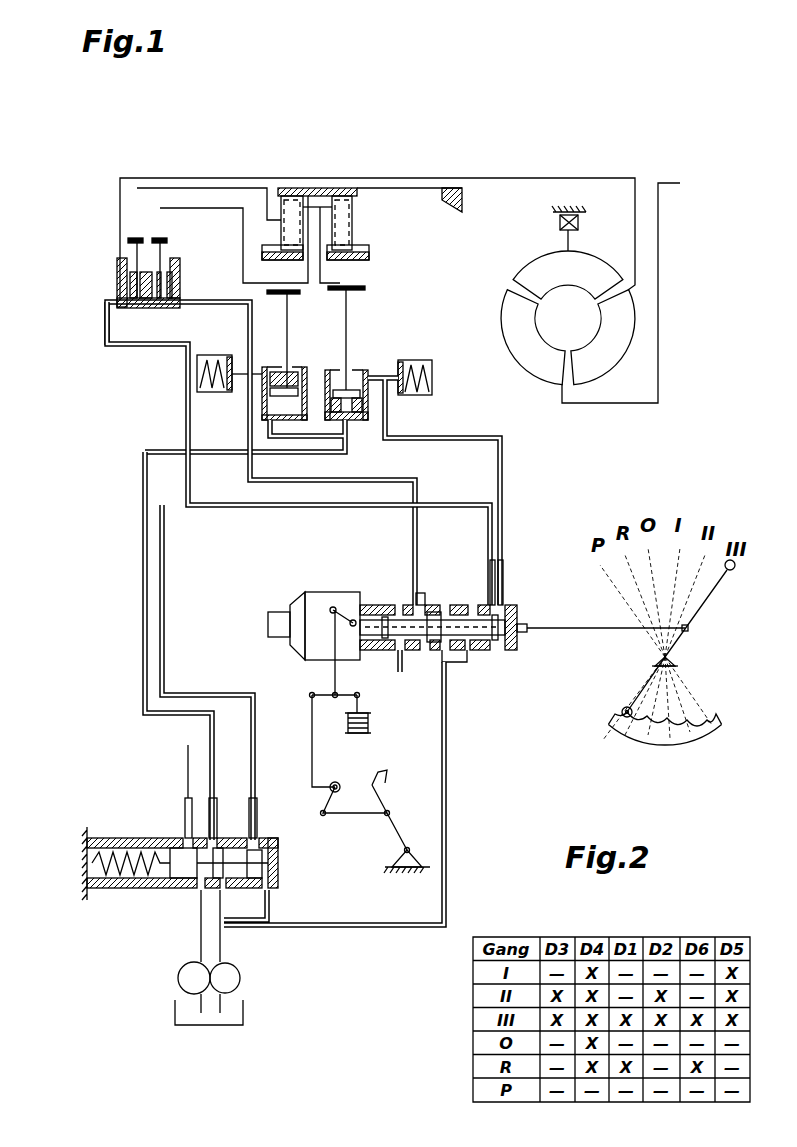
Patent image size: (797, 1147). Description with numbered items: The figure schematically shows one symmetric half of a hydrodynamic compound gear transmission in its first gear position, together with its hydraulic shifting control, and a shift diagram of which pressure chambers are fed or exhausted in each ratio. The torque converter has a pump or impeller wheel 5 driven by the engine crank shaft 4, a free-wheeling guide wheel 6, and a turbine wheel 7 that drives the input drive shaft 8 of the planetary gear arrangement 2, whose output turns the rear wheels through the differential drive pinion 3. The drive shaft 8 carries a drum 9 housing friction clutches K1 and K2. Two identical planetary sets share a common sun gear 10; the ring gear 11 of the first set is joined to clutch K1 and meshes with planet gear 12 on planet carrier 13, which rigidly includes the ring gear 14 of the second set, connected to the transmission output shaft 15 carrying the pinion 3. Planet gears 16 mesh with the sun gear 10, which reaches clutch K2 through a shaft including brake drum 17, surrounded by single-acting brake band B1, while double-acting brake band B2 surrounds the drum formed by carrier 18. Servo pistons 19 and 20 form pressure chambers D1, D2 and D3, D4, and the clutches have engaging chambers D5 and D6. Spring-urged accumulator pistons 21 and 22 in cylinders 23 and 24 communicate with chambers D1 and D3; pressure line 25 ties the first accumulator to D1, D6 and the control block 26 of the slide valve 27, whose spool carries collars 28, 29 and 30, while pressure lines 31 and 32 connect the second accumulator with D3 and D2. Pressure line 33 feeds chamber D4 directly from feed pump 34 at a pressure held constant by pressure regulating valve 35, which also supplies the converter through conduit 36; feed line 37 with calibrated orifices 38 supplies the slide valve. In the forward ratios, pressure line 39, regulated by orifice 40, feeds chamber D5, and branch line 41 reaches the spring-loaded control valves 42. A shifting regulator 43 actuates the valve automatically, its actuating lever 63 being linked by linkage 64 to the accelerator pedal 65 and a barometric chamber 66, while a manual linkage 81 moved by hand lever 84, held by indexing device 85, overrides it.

The planetary gear arrangement 2 is at (356, 228).
The differential drive pinion 3 is at (458, 188).
The crank shaft 4 is at (668, 183).
The pump or impeller wheel 5 is at (507, 305).
The guide wheel 6 is at (583, 258).
The turbine wheel 7 is at (605, 362).
The input drive shaft 8 is at (155, 178).
The drum 9 is at (117, 265).
The sun gear 10 is at (350, 196).
The ring gear 11 is at (262, 257).
The planet gear 12 is at (292, 200).
The planet carrier 13 is at (267, 205).
The ring gear 14 is at (369, 258).
The transmission output shaft 15 is at (418, 188).
The planet gears 16 is at (340, 188).
The brake drum 17 is at (305, 278).
The carrier 18 is at (324, 278).
The piston 19 is at (296, 373).
The piston 20 is at (359, 390).
The piston 21 is at (228, 355).
The piston 22 is at (408, 360).
The cylinder 23 is at (197, 374).
The cylinder 24 is at (432, 381).
The pressure line 25 is at (418, 492).
The control block or housing 26 is at (469, 605).
The gear shifting control spool slide valve 27 is at (478, 650).
The control collar 28 is at (497, 628).
The control collar 29 is at (437, 605).
The control collar 30 is at (385, 605).
The pressure line 31 is at (388, 428).
The pressure line 32 is at (317, 455).
The pressure line 33 is at (143, 582).
The feed pump 34 is at (243, 980).
The pressure regulating valve 35 is at (170, 890).
The conduit 36 is at (185, 787).
The feed line 37 is at (393, 928).
The calibrated nozzles or orifices 38 is at (448, 665).
The pressure line 39 is at (108, 348).
The calibrated orifice 40 is at (505, 600).
The pressure line 41 is at (167, 583).
The spring loaded control valves 42 is at (243, 837).
The shifting regulator 43 is at (297, 608).
The actuating lever 63 is at (340, 605).
The linkage 64 is at (312, 745).
The accelerator pedal 65 is at (392, 782).
The barometrically operated control expansible chamber 66 is at (372, 730).
The manually actuated linkage 81 is at (580, 632).
The hand lever 84 is at (715, 597).
The blocking or indexing device 85 is at (628, 733).
The single-acting brake band B1 is at (279, 299).
The double-acting brake band B2 is at (350, 296).
The pressure chamber D1 is at (268, 368).
The pressure chamber D2 is at (262, 408).
The pressure chamber D3 is at (335, 368).
The pressure chamber D4 is at (362, 408).
The pressure chamber D5 is at (117, 286).
The pressure chamber D6 is at (172, 286).
The friction clutch K1 is at (135, 300).
The friction clutch K2 is at (165, 300).